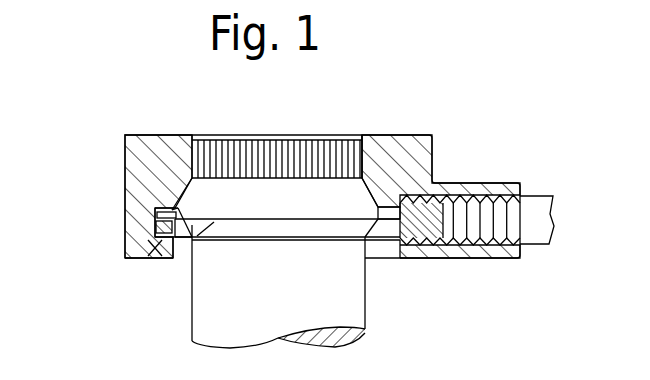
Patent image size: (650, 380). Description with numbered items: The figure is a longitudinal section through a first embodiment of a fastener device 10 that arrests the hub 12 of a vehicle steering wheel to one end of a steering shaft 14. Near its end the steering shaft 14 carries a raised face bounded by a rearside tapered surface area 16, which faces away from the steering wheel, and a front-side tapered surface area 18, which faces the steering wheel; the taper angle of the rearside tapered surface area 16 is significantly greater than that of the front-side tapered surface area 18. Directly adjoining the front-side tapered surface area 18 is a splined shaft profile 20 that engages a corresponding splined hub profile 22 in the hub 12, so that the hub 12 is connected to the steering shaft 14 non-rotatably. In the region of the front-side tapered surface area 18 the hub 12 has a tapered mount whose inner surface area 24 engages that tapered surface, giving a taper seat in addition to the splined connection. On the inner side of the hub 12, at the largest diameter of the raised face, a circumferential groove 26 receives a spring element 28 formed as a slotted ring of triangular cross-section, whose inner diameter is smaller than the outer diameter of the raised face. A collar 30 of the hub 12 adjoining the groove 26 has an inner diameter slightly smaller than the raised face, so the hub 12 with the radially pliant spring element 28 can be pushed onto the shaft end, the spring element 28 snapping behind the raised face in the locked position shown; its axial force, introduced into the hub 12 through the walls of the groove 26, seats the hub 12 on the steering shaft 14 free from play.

The fastener device 10 is at (413, 264).
The hub 12 is at (417, 153).
The steering shaft 14 is at (208, 318).
The rearside tapered surface area 16 is at (213, 238).
The front-side tapered surface area 18 is at (215, 186).
The splined shaft profile 20 is at (267, 148).
The splined hub profile 22 is at (368, 155).
The inner surface area 24 is at (359, 187).
The circumferential groove 26 is at (167, 205).
The spring element 28 is at (153, 227).
The collar 30 is at (160, 245).